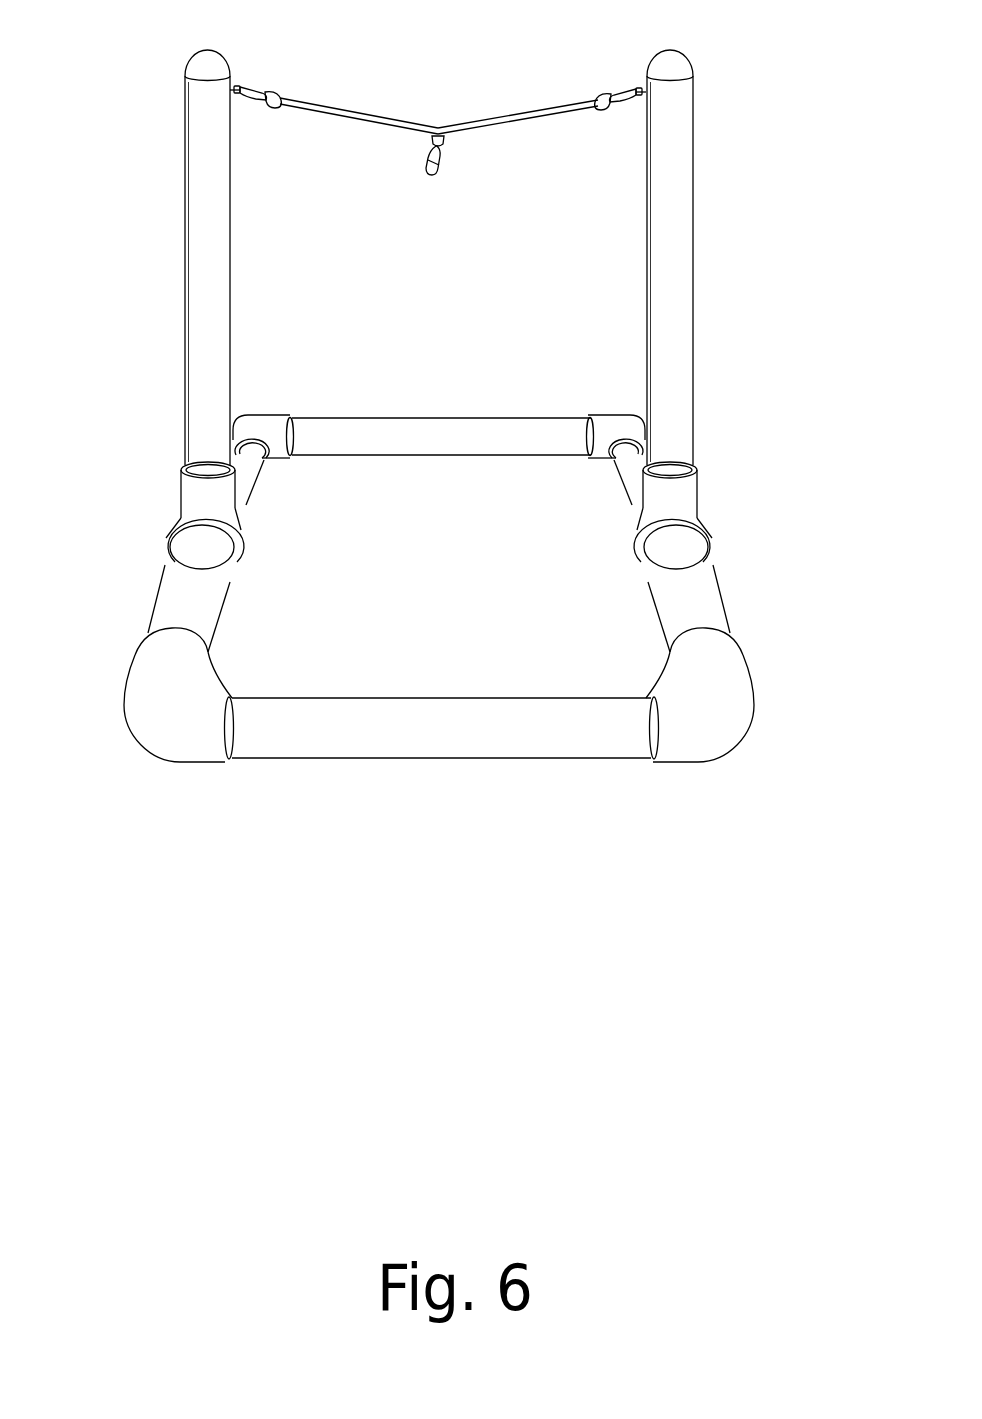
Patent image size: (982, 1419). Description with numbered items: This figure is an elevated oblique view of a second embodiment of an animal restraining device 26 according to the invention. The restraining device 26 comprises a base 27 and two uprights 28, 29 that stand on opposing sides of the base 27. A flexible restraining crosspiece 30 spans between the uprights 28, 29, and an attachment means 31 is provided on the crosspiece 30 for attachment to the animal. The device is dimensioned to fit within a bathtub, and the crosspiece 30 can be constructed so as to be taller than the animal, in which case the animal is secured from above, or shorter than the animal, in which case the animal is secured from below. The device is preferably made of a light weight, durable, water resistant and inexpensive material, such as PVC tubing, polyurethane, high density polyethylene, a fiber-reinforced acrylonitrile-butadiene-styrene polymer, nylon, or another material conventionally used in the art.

The restraining device 26 is at (469, 381).
The base 27 is at (488, 588).
The upright 28 is at (729, 257).
The upright 29 is at (147, 257).
The flexible restraining crosspiece 30 is at (438, 67).
The attachment means 31 is at (480, 187).